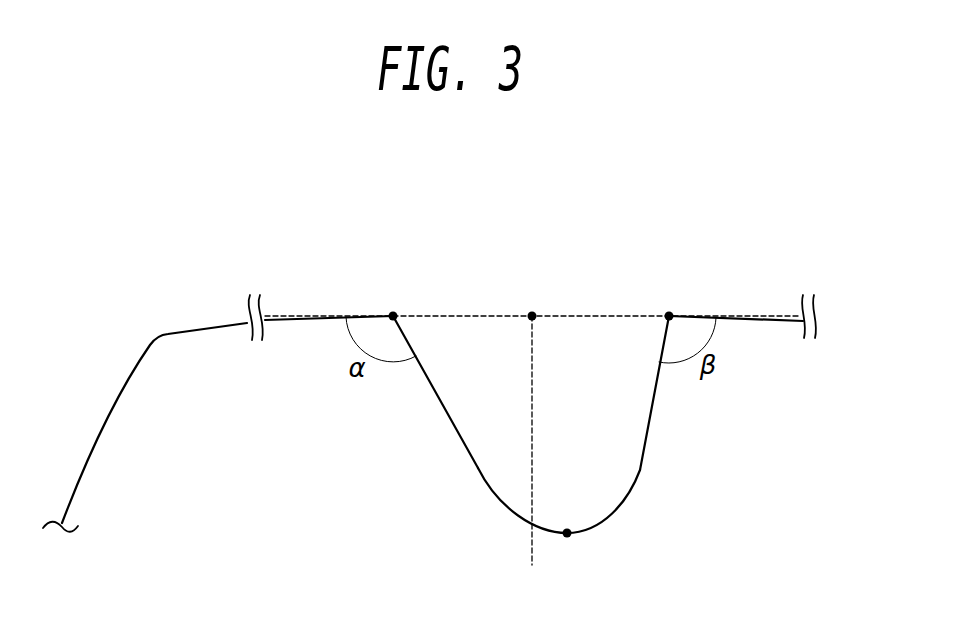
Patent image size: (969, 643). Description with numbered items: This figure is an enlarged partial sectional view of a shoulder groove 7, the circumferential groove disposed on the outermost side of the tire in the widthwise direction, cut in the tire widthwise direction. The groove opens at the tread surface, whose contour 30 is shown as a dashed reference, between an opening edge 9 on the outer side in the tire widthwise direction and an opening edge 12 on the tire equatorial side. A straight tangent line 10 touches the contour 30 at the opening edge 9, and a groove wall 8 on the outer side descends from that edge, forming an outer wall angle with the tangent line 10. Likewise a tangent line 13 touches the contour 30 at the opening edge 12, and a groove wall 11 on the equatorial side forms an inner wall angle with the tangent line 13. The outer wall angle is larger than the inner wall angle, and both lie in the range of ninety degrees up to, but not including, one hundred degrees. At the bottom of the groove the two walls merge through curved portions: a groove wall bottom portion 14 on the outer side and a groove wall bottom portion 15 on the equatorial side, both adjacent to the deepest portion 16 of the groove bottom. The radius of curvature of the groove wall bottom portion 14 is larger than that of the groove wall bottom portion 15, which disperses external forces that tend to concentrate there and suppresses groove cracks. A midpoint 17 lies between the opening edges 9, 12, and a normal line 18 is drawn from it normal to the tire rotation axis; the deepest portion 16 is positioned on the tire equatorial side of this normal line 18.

The shoulder groove 7 is at (580, 308).
The groove wall 8 is at (412, 352).
The opening edge 9 is at (393, 311).
The tangent line 10 is at (282, 316).
The groove wall 11 is at (662, 347).
The opening edge 12 is at (669, 312).
The tangent line 13 is at (785, 316).
The groove wall bottom portion 14 is at (505, 516).
The groove wall bottom portion 15 is at (622, 509).
The deepest portion of groove bottom 16 is at (564, 537).
The midpoint between opening edges 17 is at (530, 316).
The normal line 18 is at (533, 352).
The contour of tread surface 30 is at (473, 313).